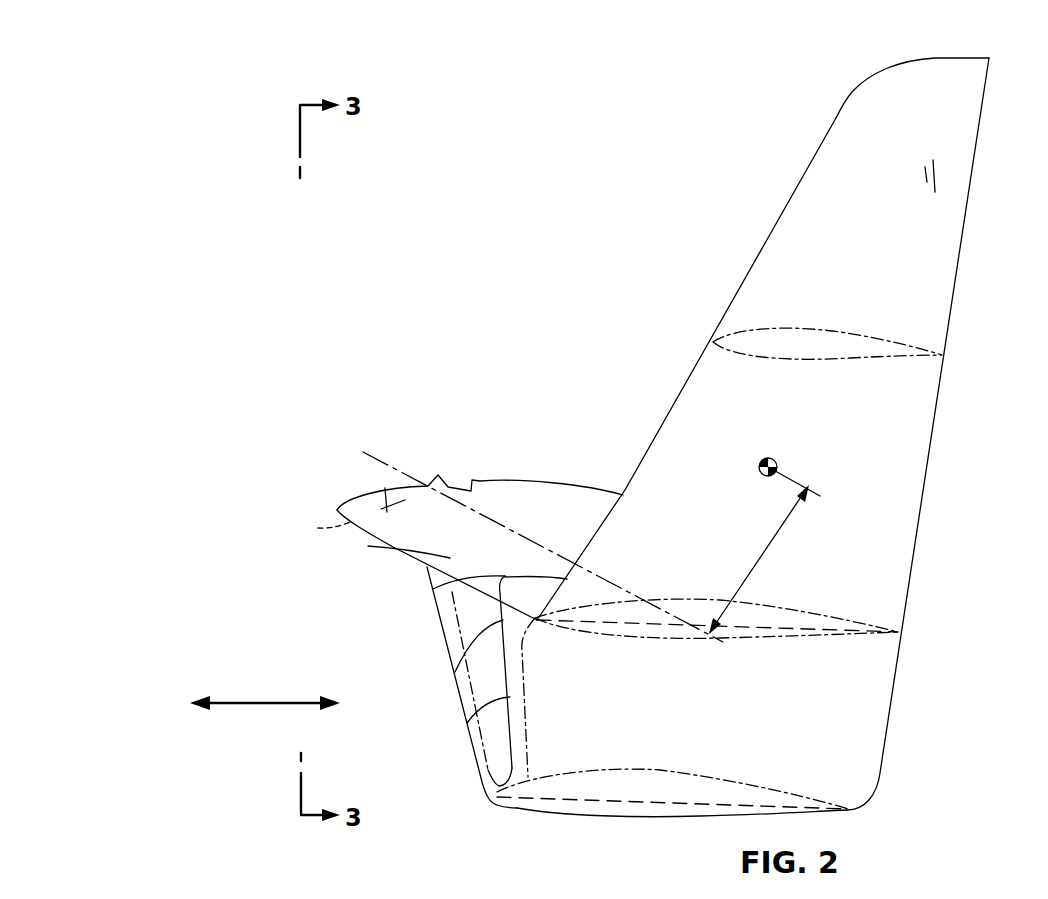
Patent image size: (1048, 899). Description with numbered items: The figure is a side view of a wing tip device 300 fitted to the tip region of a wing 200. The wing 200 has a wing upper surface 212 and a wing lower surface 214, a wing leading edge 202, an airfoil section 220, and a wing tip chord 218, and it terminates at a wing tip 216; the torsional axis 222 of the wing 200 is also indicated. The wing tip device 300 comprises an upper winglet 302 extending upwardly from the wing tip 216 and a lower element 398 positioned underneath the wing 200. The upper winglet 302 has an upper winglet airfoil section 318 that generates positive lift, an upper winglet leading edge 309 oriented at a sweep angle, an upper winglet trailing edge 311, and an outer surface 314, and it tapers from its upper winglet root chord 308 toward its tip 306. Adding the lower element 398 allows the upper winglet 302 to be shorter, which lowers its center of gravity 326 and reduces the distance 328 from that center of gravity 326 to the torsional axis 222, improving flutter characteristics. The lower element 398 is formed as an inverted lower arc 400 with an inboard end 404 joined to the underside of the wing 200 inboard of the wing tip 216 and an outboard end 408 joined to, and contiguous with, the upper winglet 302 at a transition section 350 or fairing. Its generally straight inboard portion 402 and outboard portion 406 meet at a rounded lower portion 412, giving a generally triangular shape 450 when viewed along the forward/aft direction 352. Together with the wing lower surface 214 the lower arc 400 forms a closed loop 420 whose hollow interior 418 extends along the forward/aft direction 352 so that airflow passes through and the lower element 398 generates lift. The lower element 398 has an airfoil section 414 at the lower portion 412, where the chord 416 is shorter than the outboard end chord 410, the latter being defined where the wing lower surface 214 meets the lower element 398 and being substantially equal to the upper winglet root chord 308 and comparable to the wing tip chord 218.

The wing 200 is at (238, 348).
The wing leading edge 202 is at (337, 510).
The wing upper surface 212 is at (384, 494).
The wing lower surface 214 is at (312, 519).
The wing tip 216 is at (368, 546).
The wing tip chord 218 is at (530, 575).
The airfoil section 220 is at (440, 588).
The torsional axis 222 is at (387, 462).
The wing tip device 300 is at (711, 184).
The upper winglet 302 is at (786, 417).
The tip 306 is at (928, 56).
The upper winglet root chord 308 is at (780, 630).
The upper winglet leading edge 309 is at (733, 300).
The upper winglet trailing edge 311 is at (957, 282).
The outer surface 314 is at (935, 173).
The upper winglet airfoil section 318 is at (898, 357).
The center of gravity 326 is at (772, 456).
The distance 328 is at (772, 545).
The transition section 350 is at (548, 577).
The forward/aft direction 352 is at (258, 702).
The lower element 398 is at (880, 776).
The lower arc 400 is at (887, 723).
The inboard portion 402 is at (453, 648).
The inboard end 404 is at (427, 568).
The outboard portion 406 is at (467, 720).
The outboard end 408 is at (457, 670).
The outboard end chord 410 is at (627, 627).
The rounded lower portion 412 is at (485, 787).
The airfoil section 414 is at (585, 774).
The chord 416 is at (636, 802).
The hollow interior 418 is at (496, 731).
The closed loop 420 is at (443, 620).
The triangular shape 450 is at (517, 808).